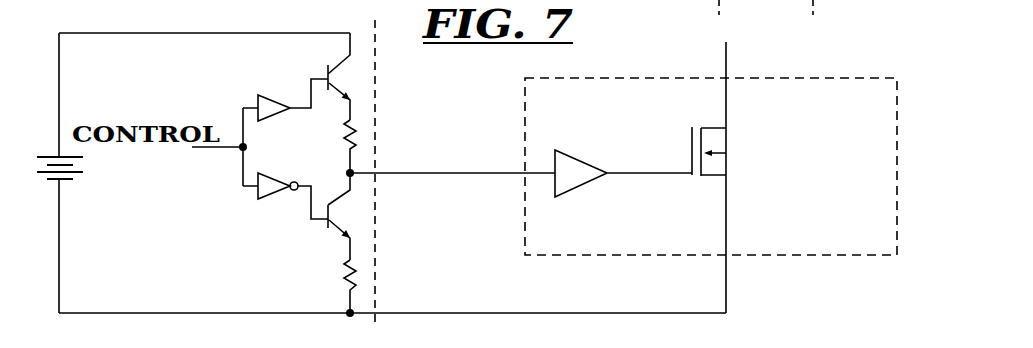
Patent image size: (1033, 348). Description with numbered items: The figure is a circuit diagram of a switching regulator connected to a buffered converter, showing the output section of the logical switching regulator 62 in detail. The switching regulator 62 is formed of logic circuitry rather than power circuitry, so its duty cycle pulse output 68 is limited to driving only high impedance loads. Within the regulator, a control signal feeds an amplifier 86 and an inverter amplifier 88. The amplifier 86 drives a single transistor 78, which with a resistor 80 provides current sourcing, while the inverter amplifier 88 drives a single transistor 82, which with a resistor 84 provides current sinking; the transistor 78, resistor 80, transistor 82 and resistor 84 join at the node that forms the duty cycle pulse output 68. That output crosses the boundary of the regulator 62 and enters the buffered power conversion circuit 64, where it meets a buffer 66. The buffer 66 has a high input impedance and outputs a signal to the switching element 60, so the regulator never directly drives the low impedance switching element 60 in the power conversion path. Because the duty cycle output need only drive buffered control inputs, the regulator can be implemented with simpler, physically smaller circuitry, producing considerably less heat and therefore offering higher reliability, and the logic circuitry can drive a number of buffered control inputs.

The switching element 60 is at (688, 160).
The logical switching regulator 62 is at (376, 75).
The buffered power conversion circuit 64 is at (523, 222).
The buffer 66 is at (583, 186).
The duty cycle pulse output 68 is at (375, 174).
The transistor 78 is at (326, 71).
The resistor 80 is at (345, 140).
The transistor 82 is at (327, 223).
The resistor 84 is at (345, 278).
The amplifier 86 is at (269, 97).
The inverter amplifier 88 is at (273, 195).